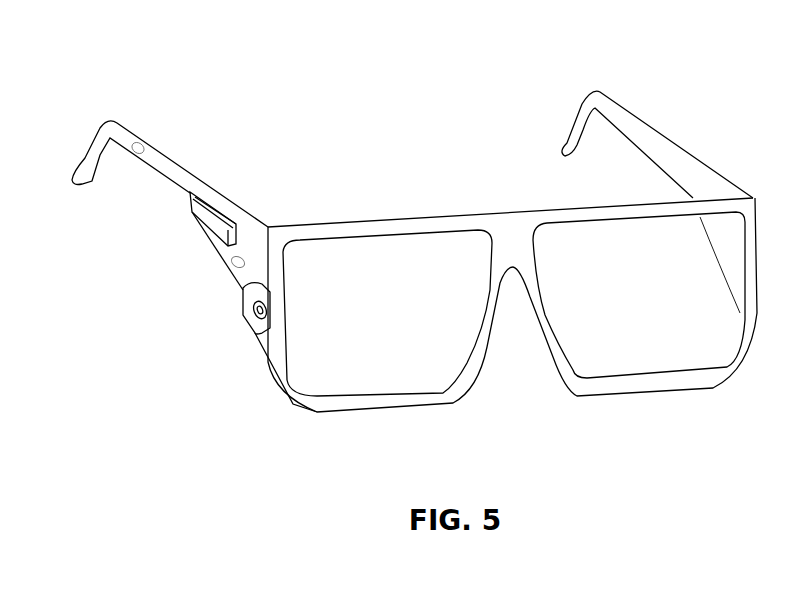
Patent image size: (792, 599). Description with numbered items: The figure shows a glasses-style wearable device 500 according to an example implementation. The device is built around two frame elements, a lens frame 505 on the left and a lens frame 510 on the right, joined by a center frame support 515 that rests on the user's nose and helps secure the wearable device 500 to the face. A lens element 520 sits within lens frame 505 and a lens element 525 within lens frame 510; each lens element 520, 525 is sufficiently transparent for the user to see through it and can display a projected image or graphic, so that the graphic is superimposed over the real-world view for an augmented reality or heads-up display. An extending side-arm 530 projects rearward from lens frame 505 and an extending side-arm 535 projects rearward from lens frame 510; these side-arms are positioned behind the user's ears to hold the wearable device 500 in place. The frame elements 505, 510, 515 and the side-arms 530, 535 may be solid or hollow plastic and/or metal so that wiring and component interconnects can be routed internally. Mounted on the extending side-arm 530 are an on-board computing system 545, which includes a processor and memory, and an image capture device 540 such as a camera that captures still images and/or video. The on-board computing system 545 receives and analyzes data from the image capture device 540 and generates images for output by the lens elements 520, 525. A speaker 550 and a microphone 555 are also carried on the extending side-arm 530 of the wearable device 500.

The wearable device 500 is at (652, 73).
The lens frame 505 is at (309, 224).
The lens frame 510 is at (677, 203).
The center frame support 515 is at (512, 227).
The lens element 520 is at (330, 378).
The lens element 525 is at (683, 350).
The extending side-arm 530 is at (168, 172).
The extending side-arm 535 is at (673, 165).
The image capture device 540 is at (247, 298).
The on-board computing system 545 is at (202, 208).
The speaker 550 is at (142, 150).
The microphone 555 is at (238, 267).